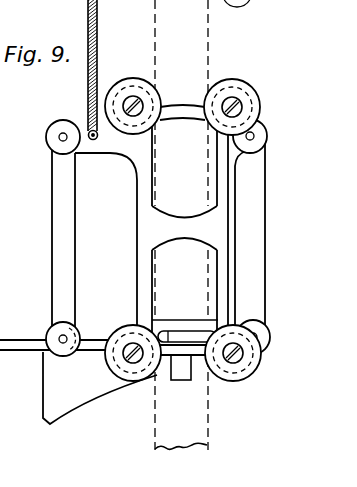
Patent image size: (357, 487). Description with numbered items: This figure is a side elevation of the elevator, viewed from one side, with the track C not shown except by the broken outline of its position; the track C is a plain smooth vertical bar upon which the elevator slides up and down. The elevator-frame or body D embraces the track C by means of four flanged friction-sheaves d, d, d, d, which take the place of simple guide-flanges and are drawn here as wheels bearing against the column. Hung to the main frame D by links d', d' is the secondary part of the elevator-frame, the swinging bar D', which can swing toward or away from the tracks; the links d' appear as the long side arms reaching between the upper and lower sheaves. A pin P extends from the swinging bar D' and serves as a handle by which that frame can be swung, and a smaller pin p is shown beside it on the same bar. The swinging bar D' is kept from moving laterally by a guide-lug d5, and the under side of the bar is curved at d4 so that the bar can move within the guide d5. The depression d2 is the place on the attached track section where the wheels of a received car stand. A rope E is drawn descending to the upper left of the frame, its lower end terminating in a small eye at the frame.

The rope E is at (97, 33).
The elevator-track C is at (205, 58).
The elevator-frame D is at (184, 228).
The secondary part of the elevator-frame D' is at (110, 342).
The flanged friction-sheave d is at (180, 223).
The link d' is at (158, 237).
The depression d2 is at (10, 333).
The curved under side d4 is at (64, 411).
The guide-lug d5 is at (182, 381).
The pin p is at (172, 331).
The pin P is at (205, 332).